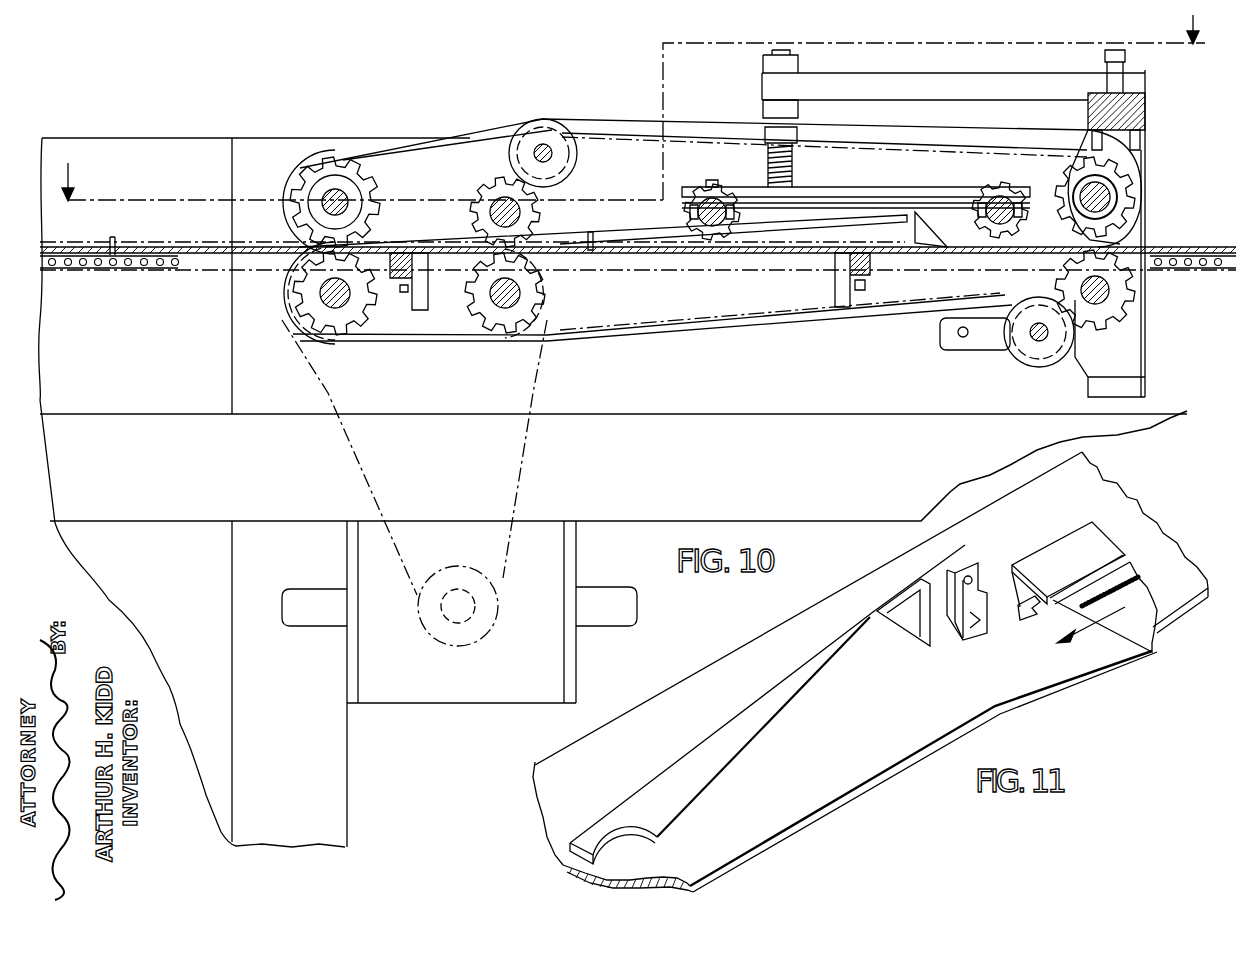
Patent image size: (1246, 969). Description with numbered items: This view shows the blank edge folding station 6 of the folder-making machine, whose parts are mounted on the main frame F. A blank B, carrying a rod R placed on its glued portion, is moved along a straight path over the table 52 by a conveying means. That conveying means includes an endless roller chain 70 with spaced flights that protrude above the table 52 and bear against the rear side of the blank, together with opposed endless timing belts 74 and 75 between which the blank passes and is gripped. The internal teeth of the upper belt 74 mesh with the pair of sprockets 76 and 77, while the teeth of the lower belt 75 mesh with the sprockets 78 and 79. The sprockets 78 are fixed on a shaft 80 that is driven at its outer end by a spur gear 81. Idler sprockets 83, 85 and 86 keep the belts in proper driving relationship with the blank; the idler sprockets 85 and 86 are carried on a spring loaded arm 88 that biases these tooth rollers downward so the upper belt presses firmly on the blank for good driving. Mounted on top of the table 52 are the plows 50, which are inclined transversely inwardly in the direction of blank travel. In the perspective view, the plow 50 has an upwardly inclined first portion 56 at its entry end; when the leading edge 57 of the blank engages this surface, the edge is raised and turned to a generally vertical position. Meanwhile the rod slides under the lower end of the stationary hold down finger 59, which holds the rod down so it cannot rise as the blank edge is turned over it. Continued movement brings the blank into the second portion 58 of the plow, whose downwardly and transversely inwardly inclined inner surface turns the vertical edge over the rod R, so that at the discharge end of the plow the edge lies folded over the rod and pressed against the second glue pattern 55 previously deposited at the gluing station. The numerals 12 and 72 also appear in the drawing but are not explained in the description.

In FIG. 10, the blank edge folding station 6 is at (640, 85).
In FIG. 10, the section line 12 is at (633, 134).
In FIG. 10, the plow 50 is at (620, 240).
In FIG. 11, the plow 50 is at (694, 752).
In FIG. 10, the table 52 is at (260, 231).
In FIG. 11, the table 52 is at (1053, 672).
In FIG. 11, the second glue pattern 55 is at (1130, 585).
In FIG. 10, the first portion 56 is at (935, 228).
In FIG. 11, the first portion 56 is at (932, 592).
In FIG. 11, the leading edge 57 is at (1012, 574).
In FIG. 10, the second portion 58 is at (836, 238).
In FIG. 11, the second portion 58 is at (875, 612).
In FIG. 11, the hold down finger 59 is at (976, 636).
In FIG. 10, the endless roller chain 70 is at (120, 272).
In FIG. 10, the pin 72 is at (113, 240).
In FIG. 10, the endless belt 74 is at (447, 138).
In FIG. 10, the endless belt 75 is at (655, 328).
In FIG. 10, the sprocket 76 is at (372, 197).
In FIG. 10, the sprocket 77 is at (1140, 207).
In FIG. 10, the sprocket 78 is at (337, 336).
In FIG. 10, the sprocket 79 is at (1083, 330).
In FIG. 10, the shaft 80 is at (342, 304).
In FIG. 10, the spur gear 81 is at (293, 314).
In FIG. 10, the idler sprocket 83 is at (542, 214).
In FIG. 10, the idler sprocket 85 is at (683, 214).
In FIG. 10, the idler sprocket 86 is at (990, 187).
In FIG. 10, the spring loaded arm 88 is at (836, 190).
In FIG. 10, the main frame F is at (170, 481).
In FIG. 11, the blank B is at (1068, 540).
In FIG. 11, the rod R is at (1122, 558).